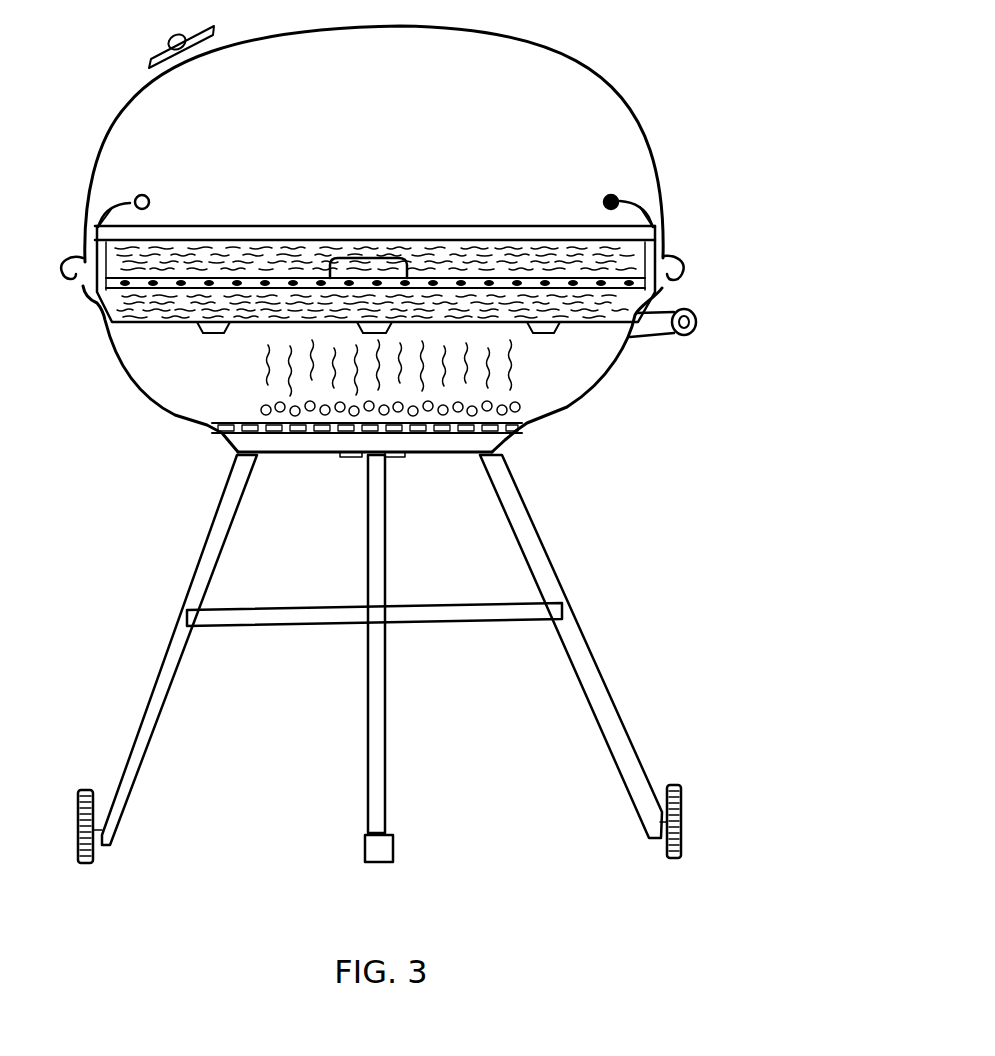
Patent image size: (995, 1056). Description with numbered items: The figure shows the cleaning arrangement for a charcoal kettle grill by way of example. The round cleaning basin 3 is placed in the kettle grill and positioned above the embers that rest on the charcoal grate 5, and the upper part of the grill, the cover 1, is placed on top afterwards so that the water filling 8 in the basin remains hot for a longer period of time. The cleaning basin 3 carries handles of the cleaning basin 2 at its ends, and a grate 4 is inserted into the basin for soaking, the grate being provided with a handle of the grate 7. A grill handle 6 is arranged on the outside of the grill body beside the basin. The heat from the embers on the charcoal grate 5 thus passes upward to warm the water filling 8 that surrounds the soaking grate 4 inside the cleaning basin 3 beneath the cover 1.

The upper part of grill 1 is at (635, 135).
The handles of cleaning basin 2 is at (120, 205).
The cleaning basin 3 is at (653, 238).
The grate 4 is at (648, 292).
The charcoal grate 5 is at (513, 430).
The grill handle 6 is at (696, 327).
The handle of grate 7 is at (410, 260).
The water filling 8 is at (520, 305).